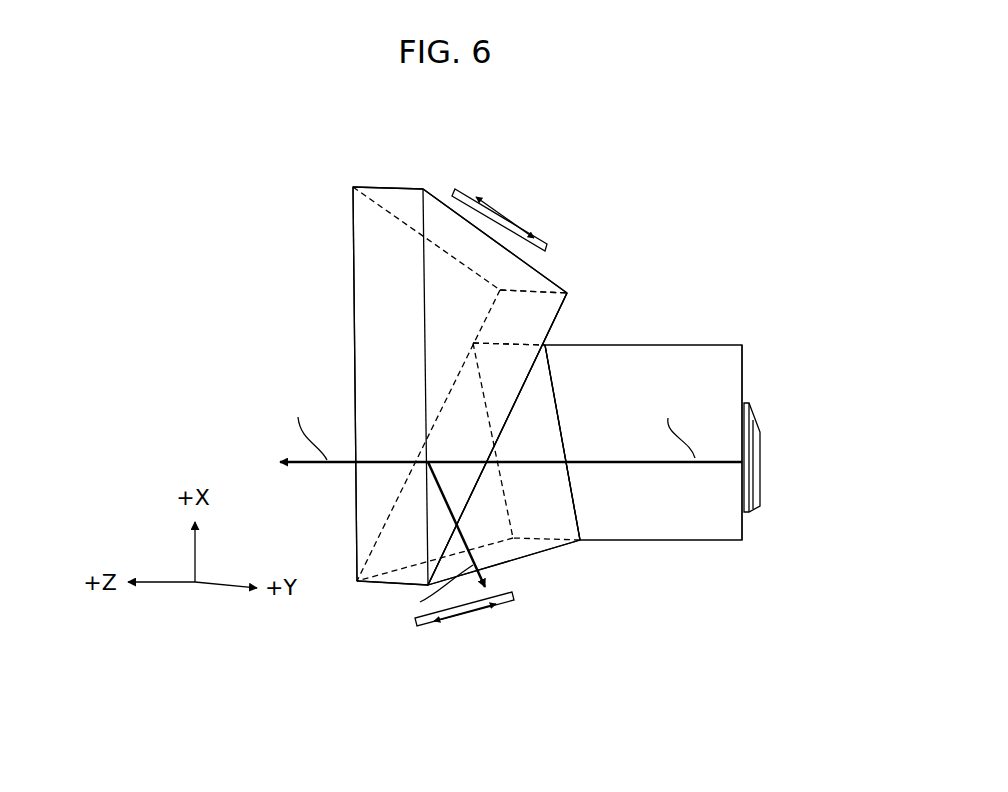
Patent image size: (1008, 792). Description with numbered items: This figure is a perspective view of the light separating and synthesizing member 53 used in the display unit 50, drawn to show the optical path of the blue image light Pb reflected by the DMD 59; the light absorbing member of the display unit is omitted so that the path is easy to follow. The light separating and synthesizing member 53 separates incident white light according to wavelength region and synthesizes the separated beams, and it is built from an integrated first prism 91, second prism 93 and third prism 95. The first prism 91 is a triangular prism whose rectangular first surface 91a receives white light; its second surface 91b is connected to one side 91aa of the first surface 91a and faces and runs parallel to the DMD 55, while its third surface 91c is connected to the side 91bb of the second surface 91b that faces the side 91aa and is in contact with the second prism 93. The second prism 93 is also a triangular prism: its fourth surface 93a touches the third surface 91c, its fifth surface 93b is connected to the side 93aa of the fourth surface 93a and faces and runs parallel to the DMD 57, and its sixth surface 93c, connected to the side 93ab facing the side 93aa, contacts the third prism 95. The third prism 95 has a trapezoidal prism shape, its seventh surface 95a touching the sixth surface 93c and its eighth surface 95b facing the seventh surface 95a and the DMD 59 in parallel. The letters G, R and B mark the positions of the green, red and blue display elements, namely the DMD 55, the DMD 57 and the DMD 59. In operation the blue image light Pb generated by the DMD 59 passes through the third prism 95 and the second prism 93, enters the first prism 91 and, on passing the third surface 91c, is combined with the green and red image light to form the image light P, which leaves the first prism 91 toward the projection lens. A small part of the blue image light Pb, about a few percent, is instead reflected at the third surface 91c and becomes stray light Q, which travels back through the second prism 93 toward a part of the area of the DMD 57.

The display unit 50 is at (624, 160).
The light separating and synthesizing member 53 is at (557, 167).
The DMD 55 is at (465, 187).
The DMD 57 is at (488, 608).
The DMD 59 is at (757, 418).
The first prism 91 is at (387, 192).
The first surface 91a is at (368, 330).
The side 91aa is at (372, 188).
The second surface 91b is at (533, 283).
The side 91bb is at (547, 285).
The third surface 91c is at (543, 307).
The second prism 93 is at (528, 547).
The fourth surface 93a is at (410, 530).
The side 93aa is at (377, 587).
The side 93ab is at (510, 342).
The fifth surface 93b is at (502, 553).
The sixth surface 93c is at (530, 507).
The third prism 95 is at (681, 344).
The seventh surface 95a is at (547, 478).
The eighth surface 95b is at (743, 363).
The green light G is at (516, 200).
The red light R is at (459, 637).
The blue light B is at (769, 463).
The image light P is at (511, 426).
The blue image light Pb is at (676, 423).
The stray light Q is at (433, 590).